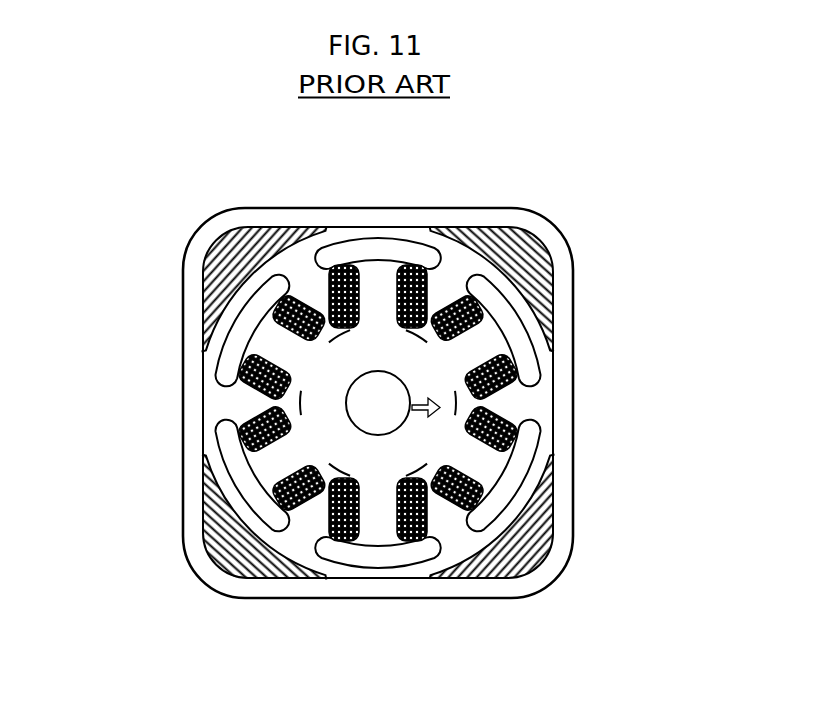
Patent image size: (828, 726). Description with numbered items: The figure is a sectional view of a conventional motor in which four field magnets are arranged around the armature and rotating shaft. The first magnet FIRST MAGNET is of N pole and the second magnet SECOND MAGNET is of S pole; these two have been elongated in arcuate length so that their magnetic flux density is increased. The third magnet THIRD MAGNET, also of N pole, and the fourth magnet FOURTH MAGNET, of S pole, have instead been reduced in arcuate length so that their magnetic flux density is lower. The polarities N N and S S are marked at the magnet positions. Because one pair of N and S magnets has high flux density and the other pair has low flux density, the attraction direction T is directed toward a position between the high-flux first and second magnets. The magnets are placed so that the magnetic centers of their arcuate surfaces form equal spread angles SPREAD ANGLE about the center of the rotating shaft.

The first magnet FIRST MAGNET is at (550, 273).
The second magnet SECOND MAGNET is at (552, 523).
The third magnet THIRD MAGNET is at (200, 522).
The fourth magnet FOURTH MAGNET is at (210, 263).
The S pole S is at (622, 626).
The N pole N is at (157, 620).
The attraction direction T is at (426, 392).
The spread angle SPREAD ANGLE is at (590, 178).